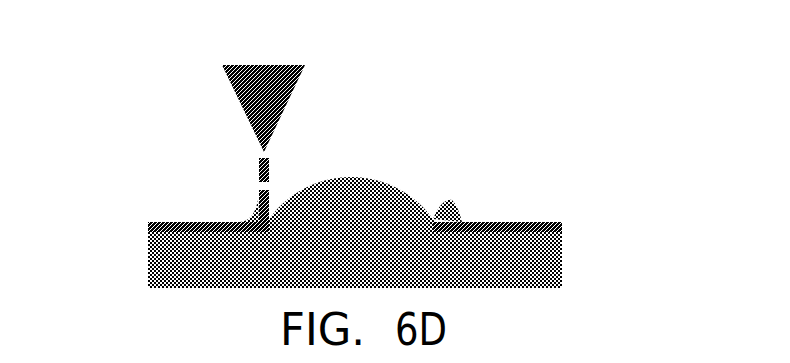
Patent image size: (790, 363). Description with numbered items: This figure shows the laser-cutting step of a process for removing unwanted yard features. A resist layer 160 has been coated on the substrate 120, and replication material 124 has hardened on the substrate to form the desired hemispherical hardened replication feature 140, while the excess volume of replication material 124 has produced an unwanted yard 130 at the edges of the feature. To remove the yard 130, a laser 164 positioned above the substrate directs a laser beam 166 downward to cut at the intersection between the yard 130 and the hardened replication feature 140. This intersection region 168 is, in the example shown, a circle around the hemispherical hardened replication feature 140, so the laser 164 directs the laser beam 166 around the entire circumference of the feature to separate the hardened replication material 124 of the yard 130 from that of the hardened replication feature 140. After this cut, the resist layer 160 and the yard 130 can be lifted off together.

The substrate 120 is at (160, 265).
The replication material 124 is at (351, 164).
The hardened replication feature 140 is at (355, 200).
The yard 130 is at (454, 205).
The resist layer 160 is at (560, 222).
The laser 164 is at (222, 64).
The laser beam 166 is at (258, 177).
The intersection region 168 is at (257, 222).